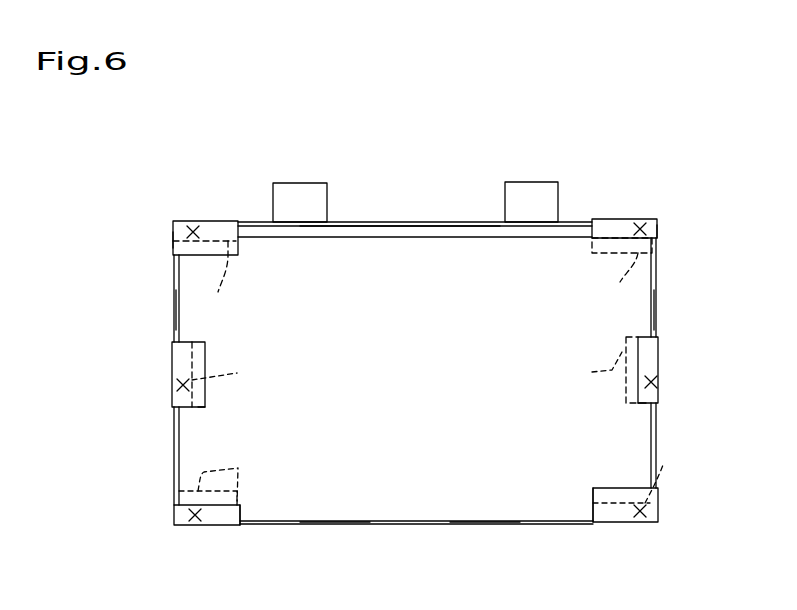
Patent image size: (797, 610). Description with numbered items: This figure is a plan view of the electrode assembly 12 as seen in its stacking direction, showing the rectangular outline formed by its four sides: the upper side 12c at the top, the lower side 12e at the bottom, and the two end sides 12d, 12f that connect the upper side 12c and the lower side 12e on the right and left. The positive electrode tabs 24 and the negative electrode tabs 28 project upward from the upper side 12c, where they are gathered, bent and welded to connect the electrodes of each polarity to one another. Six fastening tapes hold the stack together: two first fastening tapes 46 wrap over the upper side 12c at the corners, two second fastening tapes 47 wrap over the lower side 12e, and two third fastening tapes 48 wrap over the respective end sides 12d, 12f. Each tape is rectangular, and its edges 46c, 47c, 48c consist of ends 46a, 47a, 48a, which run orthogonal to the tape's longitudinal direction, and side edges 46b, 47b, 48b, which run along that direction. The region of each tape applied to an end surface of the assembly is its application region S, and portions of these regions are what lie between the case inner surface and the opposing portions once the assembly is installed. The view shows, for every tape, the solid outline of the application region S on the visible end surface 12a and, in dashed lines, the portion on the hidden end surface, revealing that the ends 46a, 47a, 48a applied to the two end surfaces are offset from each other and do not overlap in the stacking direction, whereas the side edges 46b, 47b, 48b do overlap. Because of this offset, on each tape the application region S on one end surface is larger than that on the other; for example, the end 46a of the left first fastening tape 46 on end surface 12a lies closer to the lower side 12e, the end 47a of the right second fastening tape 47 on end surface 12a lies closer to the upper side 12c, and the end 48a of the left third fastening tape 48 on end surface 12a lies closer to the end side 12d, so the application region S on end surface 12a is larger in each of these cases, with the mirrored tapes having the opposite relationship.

The electrode assembly 12 is at (641, 121).
The one end surface 12a is at (333, 525).
The upper side 12c is at (370, 221).
The end side 12d is at (657, 305).
The lower side 12e is at (483, 526).
The end side 12f is at (174, 305).
The positive electrode tabs 24 is at (302, 200).
The negative electrode tabs 28 is at (532, 200).
The first fastening tape 46 is at (214, 231).
The end 46a is at (197, 260).
The side edge 46b is at (241, 250).
The edge 46c is at (171, 240).
The second fastening tape 47 is at (214, 528).
The end 47a is at (240, 468).
The side edge 47b is at (174, 508).
The edge 47c is at (243, 512).
The third fastening tape 48 is at (178, 356).
The end 48a is at (207, 352).
The side edge 48b is at (190, 335).
The edge 48c is at (203, 410).
The application region S is at (186, 232).